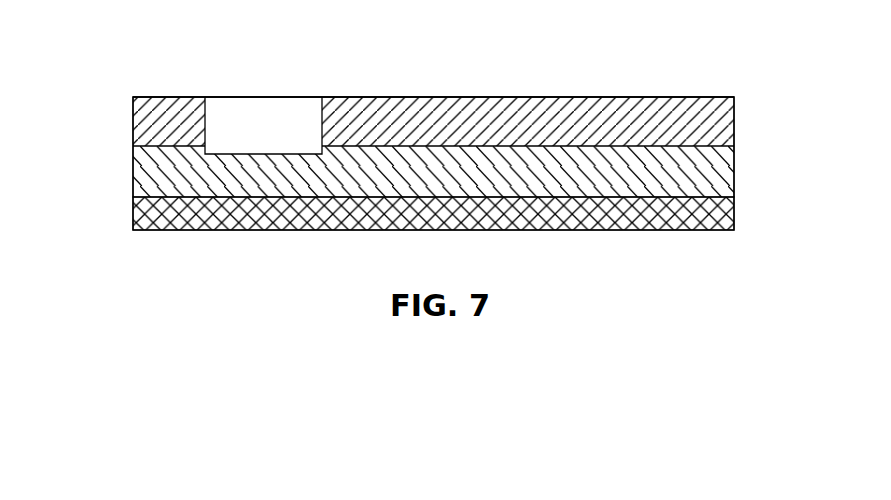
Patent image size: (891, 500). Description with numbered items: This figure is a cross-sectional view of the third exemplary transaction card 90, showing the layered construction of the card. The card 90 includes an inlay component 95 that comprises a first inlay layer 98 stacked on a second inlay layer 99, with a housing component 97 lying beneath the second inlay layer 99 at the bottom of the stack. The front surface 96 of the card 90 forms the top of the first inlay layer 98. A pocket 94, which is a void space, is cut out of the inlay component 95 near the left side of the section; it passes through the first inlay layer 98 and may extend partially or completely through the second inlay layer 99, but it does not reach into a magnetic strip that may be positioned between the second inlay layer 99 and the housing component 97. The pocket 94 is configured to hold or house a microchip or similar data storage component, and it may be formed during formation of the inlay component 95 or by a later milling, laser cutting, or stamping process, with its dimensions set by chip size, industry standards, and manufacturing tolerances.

The third exemplary transaction card 90 is at (427, 273).
The pocket 94 is at (263, 98).
The inlay component 95 is at (813, 97).
The front surface 96 is at (433, 76).
The housing component 97 is at (470, 207).
The first inlay layer 98 is at (470, 121).
The second inlay layer 99 is at (470, 165).